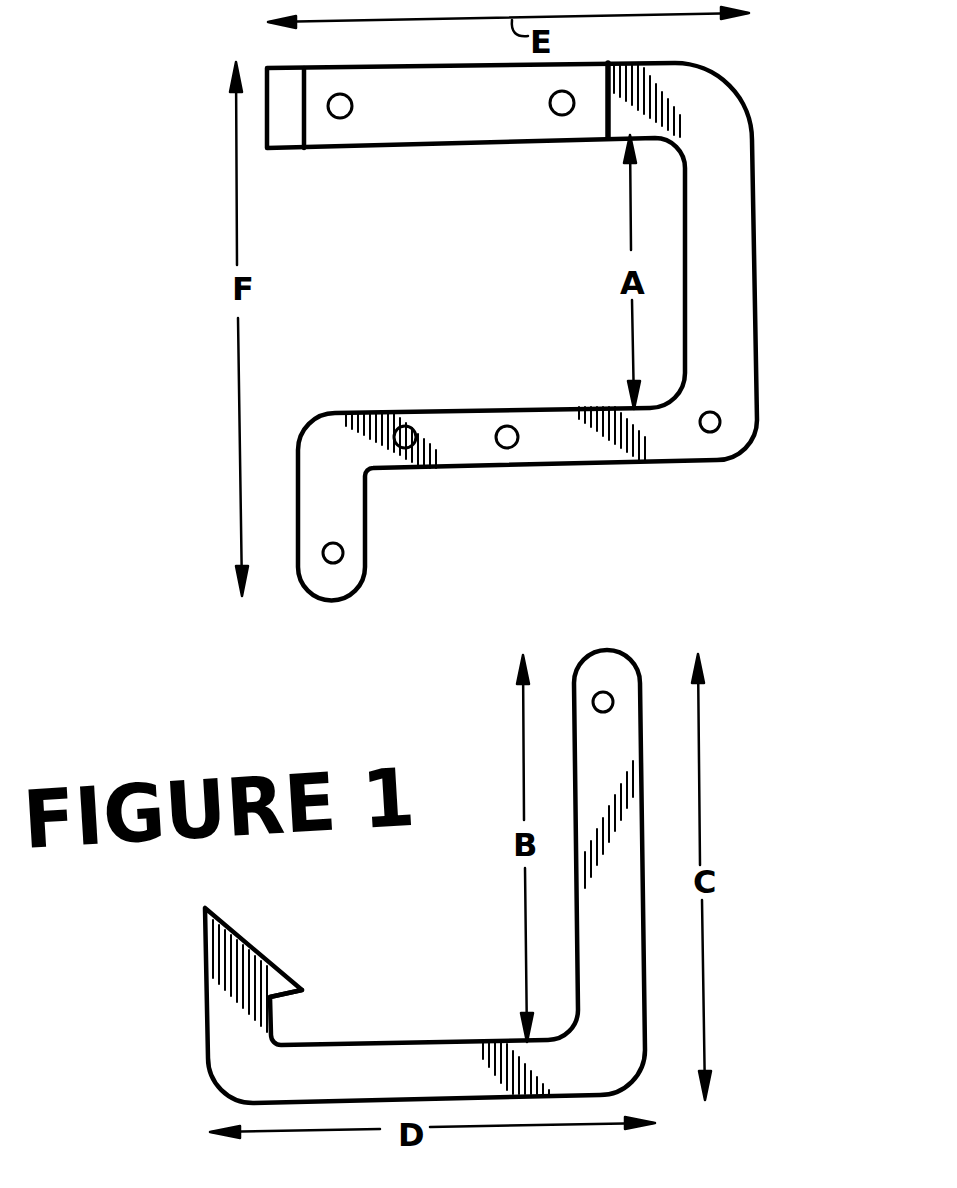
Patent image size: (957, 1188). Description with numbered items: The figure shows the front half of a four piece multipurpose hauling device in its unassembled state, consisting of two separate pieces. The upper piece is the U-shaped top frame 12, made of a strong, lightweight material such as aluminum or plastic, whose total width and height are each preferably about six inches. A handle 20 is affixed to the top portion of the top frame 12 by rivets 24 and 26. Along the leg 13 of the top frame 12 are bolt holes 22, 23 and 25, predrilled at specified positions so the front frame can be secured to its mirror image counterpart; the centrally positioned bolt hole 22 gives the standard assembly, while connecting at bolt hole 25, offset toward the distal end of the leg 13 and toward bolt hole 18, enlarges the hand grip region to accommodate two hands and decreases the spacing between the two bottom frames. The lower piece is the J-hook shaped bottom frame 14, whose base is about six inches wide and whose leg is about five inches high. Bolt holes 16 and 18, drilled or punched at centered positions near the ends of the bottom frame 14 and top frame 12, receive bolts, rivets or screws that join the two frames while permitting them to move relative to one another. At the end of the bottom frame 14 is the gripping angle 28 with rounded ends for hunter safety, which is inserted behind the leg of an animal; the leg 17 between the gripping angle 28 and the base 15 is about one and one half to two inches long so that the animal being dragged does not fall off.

The top frame 12 is at (733, 276).
The leg 13 is at (570, 452).
The bottom frame 14 is at (626, 850).
The base 15 is at (408, 1054).
The bolt hole 16 is at (612, 695).
The leg 17 is at (272, 1004).
The bolt hole 18 is at (344, 552).
The handle 20 is at (476, 128).
The bolt hole 22 is at (508, 428).
The bolt hole 23 is at (720, 427).
The rivet 24 is at (340, 118).
The bolt hole 25 is at (405, 432).
The rivet 26 is at (562, 115).
The gripping angle 28 is at (260, 970).